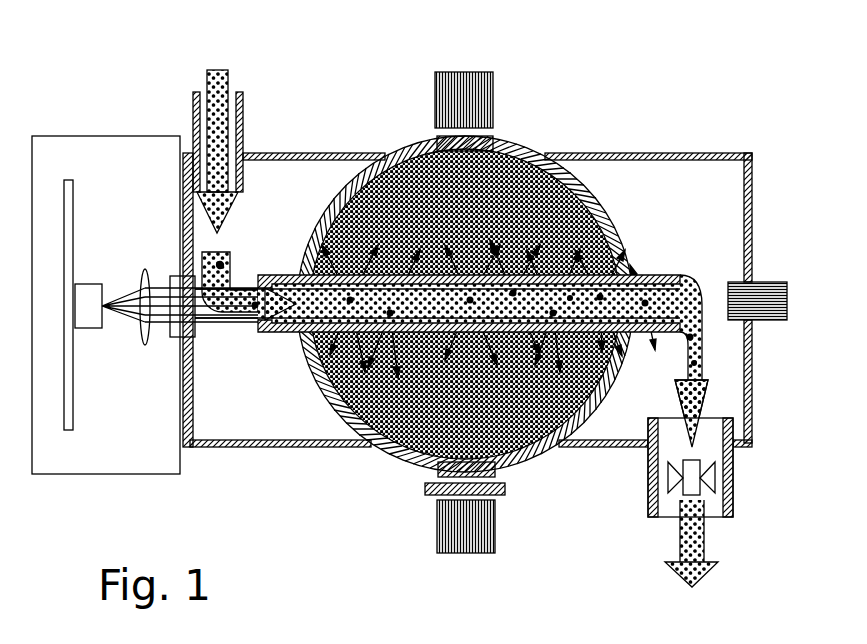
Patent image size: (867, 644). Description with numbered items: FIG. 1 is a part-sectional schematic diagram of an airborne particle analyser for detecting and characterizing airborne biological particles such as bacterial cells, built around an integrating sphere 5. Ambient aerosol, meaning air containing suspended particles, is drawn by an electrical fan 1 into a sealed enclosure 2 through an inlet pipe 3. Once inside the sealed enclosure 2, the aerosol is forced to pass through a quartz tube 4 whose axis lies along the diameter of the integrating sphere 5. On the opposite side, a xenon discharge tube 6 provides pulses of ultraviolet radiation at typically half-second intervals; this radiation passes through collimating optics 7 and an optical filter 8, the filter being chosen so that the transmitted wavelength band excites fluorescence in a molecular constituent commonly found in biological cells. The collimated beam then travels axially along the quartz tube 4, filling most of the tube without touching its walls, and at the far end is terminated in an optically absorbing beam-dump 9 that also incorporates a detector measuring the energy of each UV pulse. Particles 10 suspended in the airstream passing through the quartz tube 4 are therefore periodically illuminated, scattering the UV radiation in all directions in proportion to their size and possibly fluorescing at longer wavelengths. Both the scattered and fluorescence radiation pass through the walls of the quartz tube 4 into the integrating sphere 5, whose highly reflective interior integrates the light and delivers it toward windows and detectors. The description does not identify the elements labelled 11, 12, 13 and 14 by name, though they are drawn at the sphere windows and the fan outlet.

The electrical fan 1 is at (733, 483).
The sealed enclosure 2 is at (752, 203).
The inlet pipe 3 is at (252, 108).
The quartz tube 4 is at (268, 333).
The integrating sphere 5 is at (508, 182).
The xenon discharge tube 6 is at (84, 308).
The collimating optics 7 is at (148, 342).
The optical filter 8 is at (177, 340).
The beam-dump 9 is at (787, 300).
The particles 10 is at (378, 345).
The upper window 11 is at (440, 138).
The upper detector 12 is at (482, 92).
The lower window 13 is at (505, 489).
The lower detector 14 is at (470, 527).